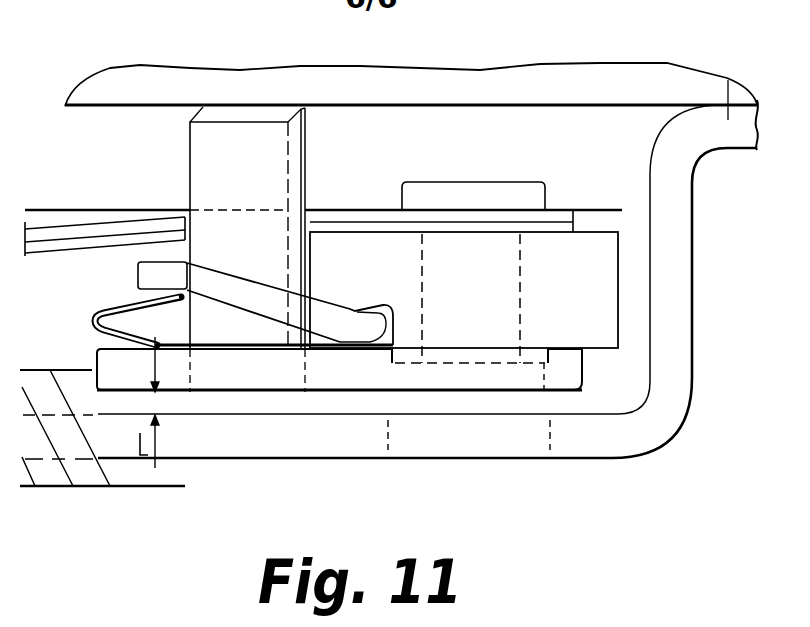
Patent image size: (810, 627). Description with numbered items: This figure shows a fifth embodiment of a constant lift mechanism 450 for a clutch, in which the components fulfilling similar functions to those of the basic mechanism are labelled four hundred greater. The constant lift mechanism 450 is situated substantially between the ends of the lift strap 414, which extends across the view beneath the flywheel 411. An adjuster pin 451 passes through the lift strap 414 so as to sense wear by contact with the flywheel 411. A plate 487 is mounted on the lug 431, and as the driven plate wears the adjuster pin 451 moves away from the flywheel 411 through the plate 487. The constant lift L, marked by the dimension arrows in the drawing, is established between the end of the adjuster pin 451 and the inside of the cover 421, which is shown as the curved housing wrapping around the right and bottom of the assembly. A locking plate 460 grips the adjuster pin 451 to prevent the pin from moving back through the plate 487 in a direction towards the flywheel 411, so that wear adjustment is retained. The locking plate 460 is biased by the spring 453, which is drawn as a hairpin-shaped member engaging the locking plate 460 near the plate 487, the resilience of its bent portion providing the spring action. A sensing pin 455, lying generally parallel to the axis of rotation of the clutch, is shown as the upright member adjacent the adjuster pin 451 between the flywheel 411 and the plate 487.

The flywheel 411 is at (422, 100).
The lift strap 414 is at (69, 228).
The cover 421 is at (728, 80).
The lug 431 is at (590, 301).
The constant lift mechanism 450 is at (225, 58).
The adjuster pin 451 is at (263, 138).
The spring 453 is at (95, 320).
The sensing pin 455 is at (210, 147).
The locking plate 460 is at (143, 272).
The plate 487 is at (337, 372).